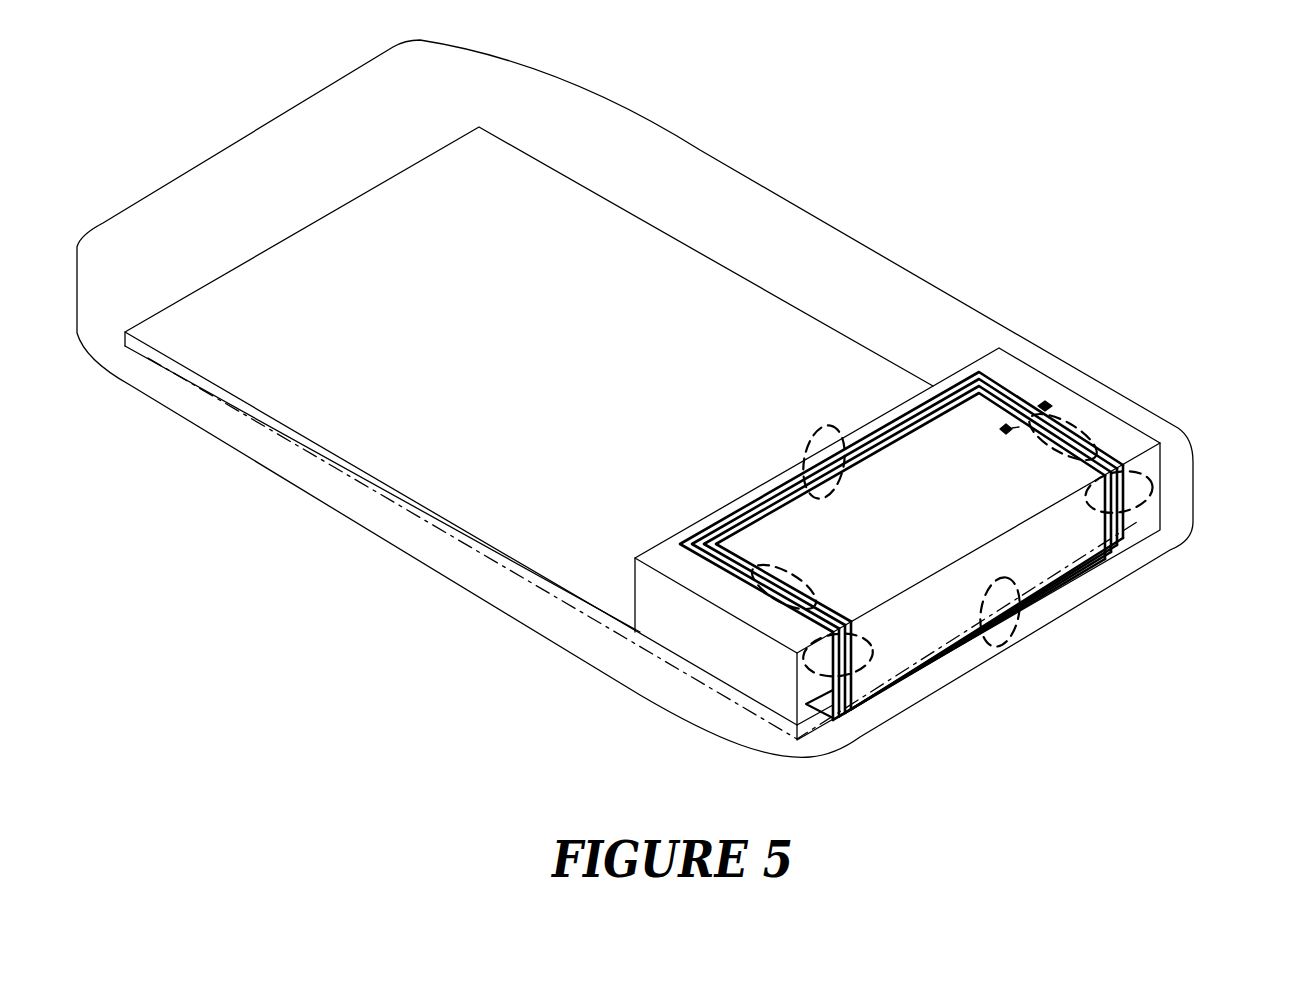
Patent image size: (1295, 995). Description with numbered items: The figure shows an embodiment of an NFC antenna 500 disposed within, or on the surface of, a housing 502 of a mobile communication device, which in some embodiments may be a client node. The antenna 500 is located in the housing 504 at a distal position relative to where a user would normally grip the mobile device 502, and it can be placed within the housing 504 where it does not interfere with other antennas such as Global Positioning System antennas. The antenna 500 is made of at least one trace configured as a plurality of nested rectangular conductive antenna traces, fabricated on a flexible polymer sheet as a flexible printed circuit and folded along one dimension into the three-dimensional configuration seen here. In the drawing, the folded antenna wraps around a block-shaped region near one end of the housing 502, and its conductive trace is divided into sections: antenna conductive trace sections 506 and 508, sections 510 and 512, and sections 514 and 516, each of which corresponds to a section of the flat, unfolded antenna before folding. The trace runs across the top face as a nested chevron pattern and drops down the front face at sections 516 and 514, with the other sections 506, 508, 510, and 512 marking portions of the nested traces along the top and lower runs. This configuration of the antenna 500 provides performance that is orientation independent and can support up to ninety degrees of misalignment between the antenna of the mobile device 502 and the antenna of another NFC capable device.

The NFC antenna 500 is at (1118, 542).
The housing 502 is at (910, 272).
The housing 504 is at (898, 167).
The antenna conductive trace section 506 is at (822, 428).
The antenna conductive trace section 508 is at (1013, 630).
The antenna conductive trace section 510 is at (1075, 417).
The antenna conductive trace section 512 is at (803, 564).
The antenna conductive trace section 514 is at (1145, 471).
The antenna conductive trace section 516 is at (858, 638).